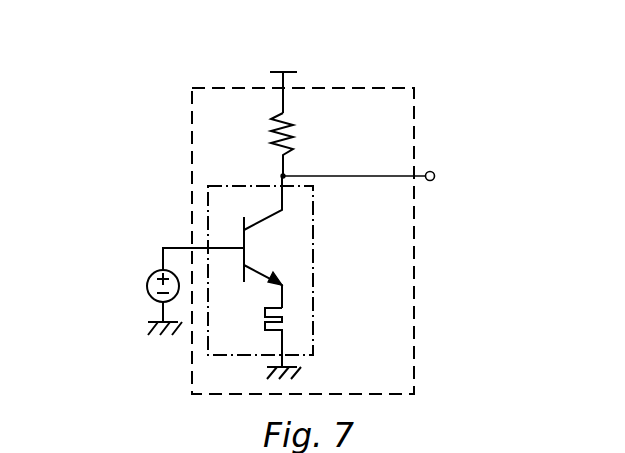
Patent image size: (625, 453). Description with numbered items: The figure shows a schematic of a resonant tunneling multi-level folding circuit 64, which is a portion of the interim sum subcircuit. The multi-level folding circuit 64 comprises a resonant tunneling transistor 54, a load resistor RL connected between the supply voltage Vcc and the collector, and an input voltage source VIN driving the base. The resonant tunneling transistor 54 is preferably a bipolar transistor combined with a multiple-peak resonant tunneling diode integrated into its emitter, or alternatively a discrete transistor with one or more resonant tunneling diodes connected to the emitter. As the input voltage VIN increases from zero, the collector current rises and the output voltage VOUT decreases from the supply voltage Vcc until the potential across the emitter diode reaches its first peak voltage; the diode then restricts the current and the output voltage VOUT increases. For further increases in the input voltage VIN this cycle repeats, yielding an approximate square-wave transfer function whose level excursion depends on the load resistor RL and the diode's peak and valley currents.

The multi-level folding circuit 64 is at (187, 88).
The resonant tunneling transistor 54 is at (318, 291).
The load resistor RL is at (299, 144).
The supply voltage Vcc is at (284, 77).
The input voltage source VIN is at (169, 291).
The output voltage VOUT is at (388, 180).